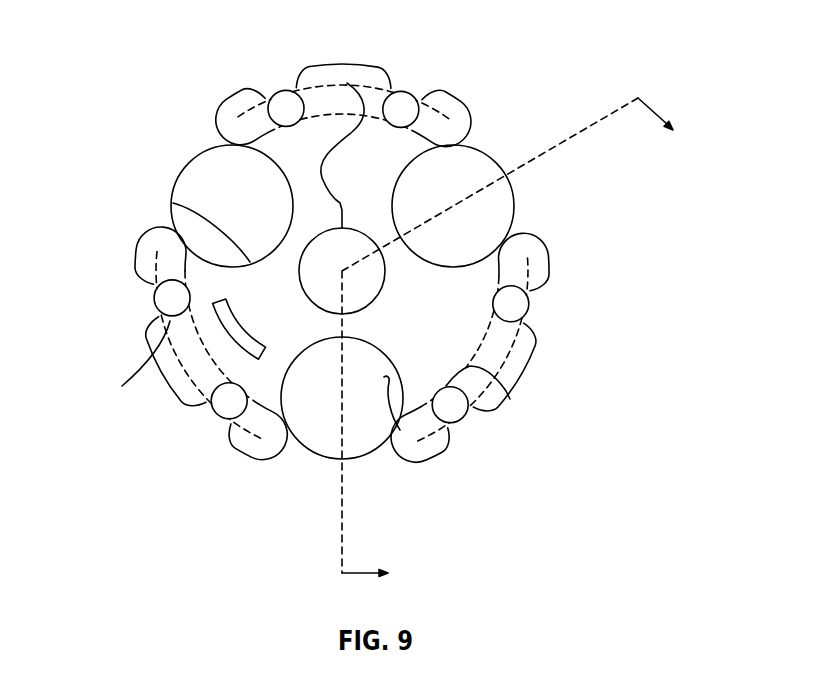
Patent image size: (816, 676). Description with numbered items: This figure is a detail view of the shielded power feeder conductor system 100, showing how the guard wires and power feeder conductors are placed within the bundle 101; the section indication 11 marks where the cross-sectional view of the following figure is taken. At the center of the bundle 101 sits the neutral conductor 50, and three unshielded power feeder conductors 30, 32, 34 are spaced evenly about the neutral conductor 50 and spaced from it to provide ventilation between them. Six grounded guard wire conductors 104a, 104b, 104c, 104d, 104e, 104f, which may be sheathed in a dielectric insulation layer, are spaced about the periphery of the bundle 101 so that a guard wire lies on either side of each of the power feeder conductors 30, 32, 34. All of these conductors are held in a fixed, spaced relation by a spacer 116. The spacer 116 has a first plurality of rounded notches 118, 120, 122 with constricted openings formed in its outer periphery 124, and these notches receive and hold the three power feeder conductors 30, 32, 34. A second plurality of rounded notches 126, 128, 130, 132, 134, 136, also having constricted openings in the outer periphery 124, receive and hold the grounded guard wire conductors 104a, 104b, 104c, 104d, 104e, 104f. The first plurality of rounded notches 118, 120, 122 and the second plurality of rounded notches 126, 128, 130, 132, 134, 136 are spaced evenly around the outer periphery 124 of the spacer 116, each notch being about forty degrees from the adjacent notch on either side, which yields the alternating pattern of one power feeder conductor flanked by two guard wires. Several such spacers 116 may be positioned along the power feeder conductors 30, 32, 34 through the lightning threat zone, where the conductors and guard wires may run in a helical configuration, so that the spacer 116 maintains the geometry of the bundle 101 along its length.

The shielded power feeder conductor system 100 is at (533, 64).
The bundle 101 is at (550, 99).
The section line 11- 11 is at (514, 343).
The unshielded power feeder conductor 30 is at (196, 156).
The unshielded power feeder conductor 32 is at (482, 154).
The unshielded power feeder conductor 34 is at (310, 458).
The neutral conductor 50 is at (388, 272).
The grounded guard wire conductor 104a is at (286, 105).
The grounded guard wire conductor 104b is at (403, 106).
The grounded guard wire conductor 104c is at (516, 305).
The grounded guard wire conductor 104d is at (456, 408).
The grounded guard wire conductor 104e is at (225, 405).
The grounded guard wire conductor 104f is at (173, 296).
The spacer 116 is at (243, 91).
The rounded notch 118 is at (173, 203).
The rounded notch 120 is at (446, 147).
The rounded notch 122 is at (400, 430).
The outer periphery 124 is at (162, 376).
The rounded notch 126 is at (148, 357).
The rounded notch 128 is at (286, 126).
The rounded notch 130 is at (394, 126).
The rounded notch 132 is at (493, 303).
The rounded notch 134 is at (507, 395).
The rounded notch 136 is at (247, 358).